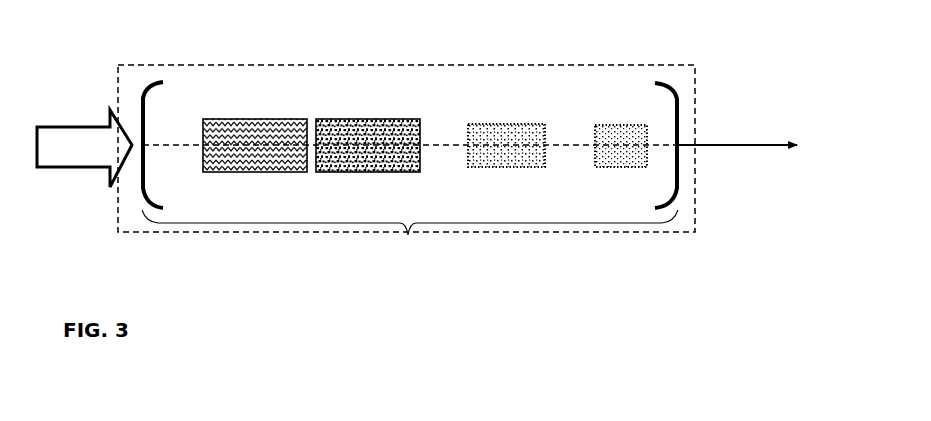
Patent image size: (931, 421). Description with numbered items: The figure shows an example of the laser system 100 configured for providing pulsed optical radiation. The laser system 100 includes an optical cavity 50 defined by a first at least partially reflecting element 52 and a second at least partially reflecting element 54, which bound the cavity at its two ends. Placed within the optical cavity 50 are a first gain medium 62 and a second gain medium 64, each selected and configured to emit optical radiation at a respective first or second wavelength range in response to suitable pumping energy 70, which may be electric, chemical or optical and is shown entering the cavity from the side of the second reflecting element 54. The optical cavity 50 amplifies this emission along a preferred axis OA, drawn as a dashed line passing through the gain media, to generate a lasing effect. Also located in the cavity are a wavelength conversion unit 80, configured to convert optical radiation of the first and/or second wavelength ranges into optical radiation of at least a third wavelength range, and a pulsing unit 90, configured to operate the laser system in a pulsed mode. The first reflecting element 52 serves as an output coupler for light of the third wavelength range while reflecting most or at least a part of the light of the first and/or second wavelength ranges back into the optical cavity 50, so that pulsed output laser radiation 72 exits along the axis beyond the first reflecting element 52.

The laser system 100 is at (585, 51).
The optical cavity 50 is at (410, 239).
The pumping energy 70 is at (84, 148).
The second surface 54 is at (146, 88).
The first surface 52 is at (675, 97).
The preferred axis OA is at (438, 142).
The output radiation 72 is at (737, 164).
The second gain medium 64 is at (232, 132).
The first gain medium 62 is at (363, 125).
The wavelength conversion unit 80 is at (507, 160).
The pulsing unit 90 is at (620, 160).